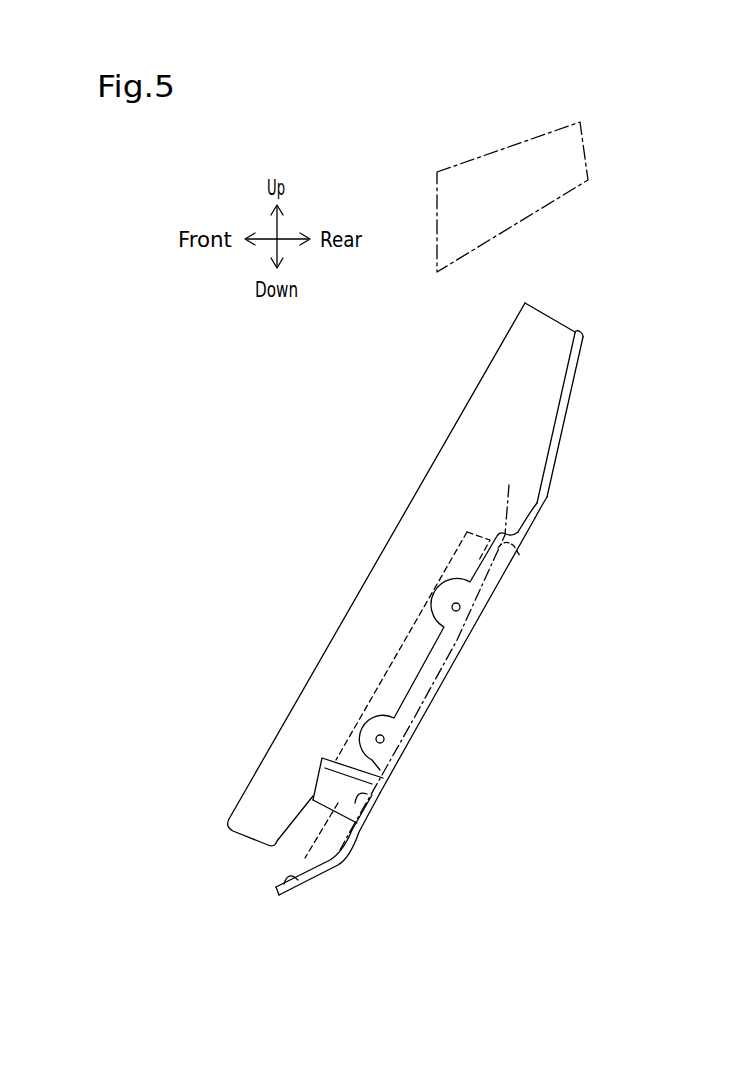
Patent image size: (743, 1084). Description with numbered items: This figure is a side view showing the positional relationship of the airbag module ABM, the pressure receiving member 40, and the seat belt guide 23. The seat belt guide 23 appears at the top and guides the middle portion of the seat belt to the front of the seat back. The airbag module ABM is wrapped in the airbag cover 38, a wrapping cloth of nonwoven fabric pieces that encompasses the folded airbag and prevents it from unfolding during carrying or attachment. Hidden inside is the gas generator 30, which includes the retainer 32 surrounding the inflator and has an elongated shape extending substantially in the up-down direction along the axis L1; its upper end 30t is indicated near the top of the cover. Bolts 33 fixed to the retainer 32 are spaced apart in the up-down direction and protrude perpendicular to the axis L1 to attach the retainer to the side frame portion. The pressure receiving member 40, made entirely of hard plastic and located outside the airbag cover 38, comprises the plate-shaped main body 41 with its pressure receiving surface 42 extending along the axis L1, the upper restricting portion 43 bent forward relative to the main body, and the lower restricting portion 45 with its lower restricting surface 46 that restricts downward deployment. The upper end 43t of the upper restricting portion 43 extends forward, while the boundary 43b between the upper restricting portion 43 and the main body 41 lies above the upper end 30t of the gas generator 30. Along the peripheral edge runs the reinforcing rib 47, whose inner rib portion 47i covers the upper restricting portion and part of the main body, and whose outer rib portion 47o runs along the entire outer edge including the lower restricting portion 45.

The seat belt guide 23 is at (472, 160).
The airbag module ABM is at (407, 428).
The airbag cover 38 is at (420, 483).
The upper restricting portion 43 is at (574, 402).
The upper end of upper restricting portion 43t is at (578, 332).
The boundary between upper restricting portion and main body 43b is at (550, 494).
The reinforcing rib 47 is at (363, 610).
The inner rib portion 47i is at (565, 377).
The outer rib portion 47o is at (303, 863).
The axis L1 is at (509, 486).
The pressure receiving member 40 is at (457, 655).
The main body 41 is at (457, 655).
The bolts 33 is at (462, 608).
The gas generator 30 is at (398, 695).
The retainer 32 is at (390, 658).
The upper end of gas generator 30t is at (513, 550).
The pressure receiving surface 42 is at (363, 798).
The lower restricting portion 45 is at (323, 873).
The lower restricting surface 46 is at (291, 883).